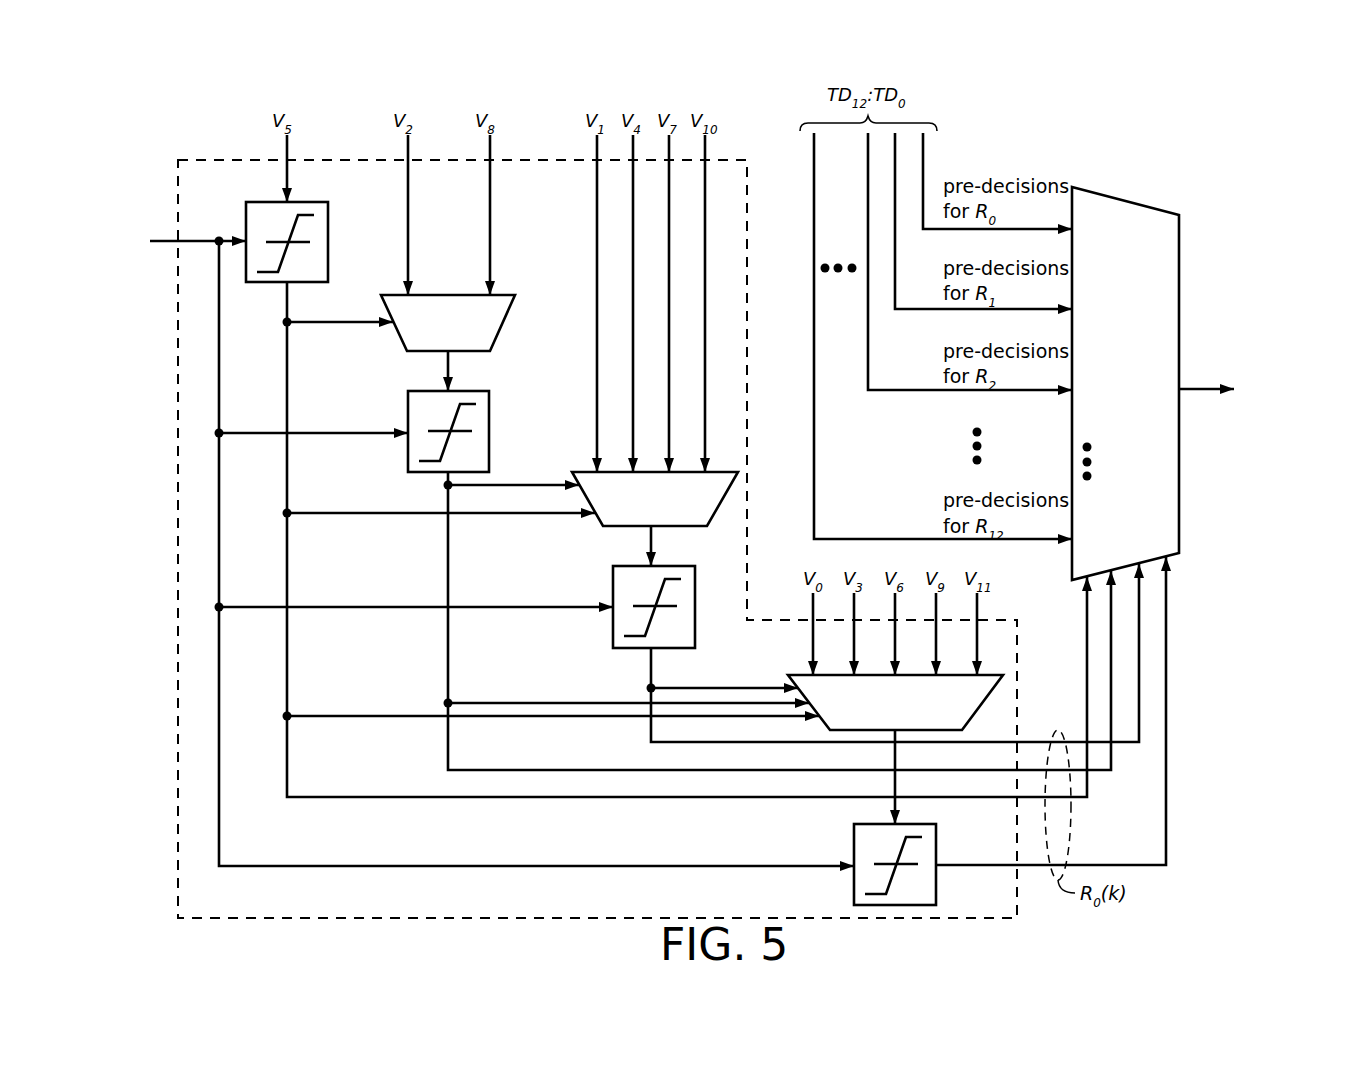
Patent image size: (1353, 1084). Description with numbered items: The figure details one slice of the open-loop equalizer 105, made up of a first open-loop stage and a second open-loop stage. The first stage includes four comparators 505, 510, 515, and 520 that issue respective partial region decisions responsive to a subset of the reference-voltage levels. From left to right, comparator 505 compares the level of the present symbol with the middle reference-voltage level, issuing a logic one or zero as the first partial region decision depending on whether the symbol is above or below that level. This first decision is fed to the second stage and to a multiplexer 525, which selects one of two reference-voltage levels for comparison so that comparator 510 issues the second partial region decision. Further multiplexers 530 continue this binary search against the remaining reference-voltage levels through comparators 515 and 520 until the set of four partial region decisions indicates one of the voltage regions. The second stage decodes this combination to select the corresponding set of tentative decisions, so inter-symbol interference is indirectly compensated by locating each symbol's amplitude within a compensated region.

The open-loop equalizer 105 is at (222, 78).
The comparator 505 is at (311, 202).
The comparator 510 is at (465, 391).
The comparator 515 is at (613, 580).
The comparator 520 is at (854, 838).
The multiplexer 525 is at (448, 263).
The multiplexer 530 is at (787, 479).